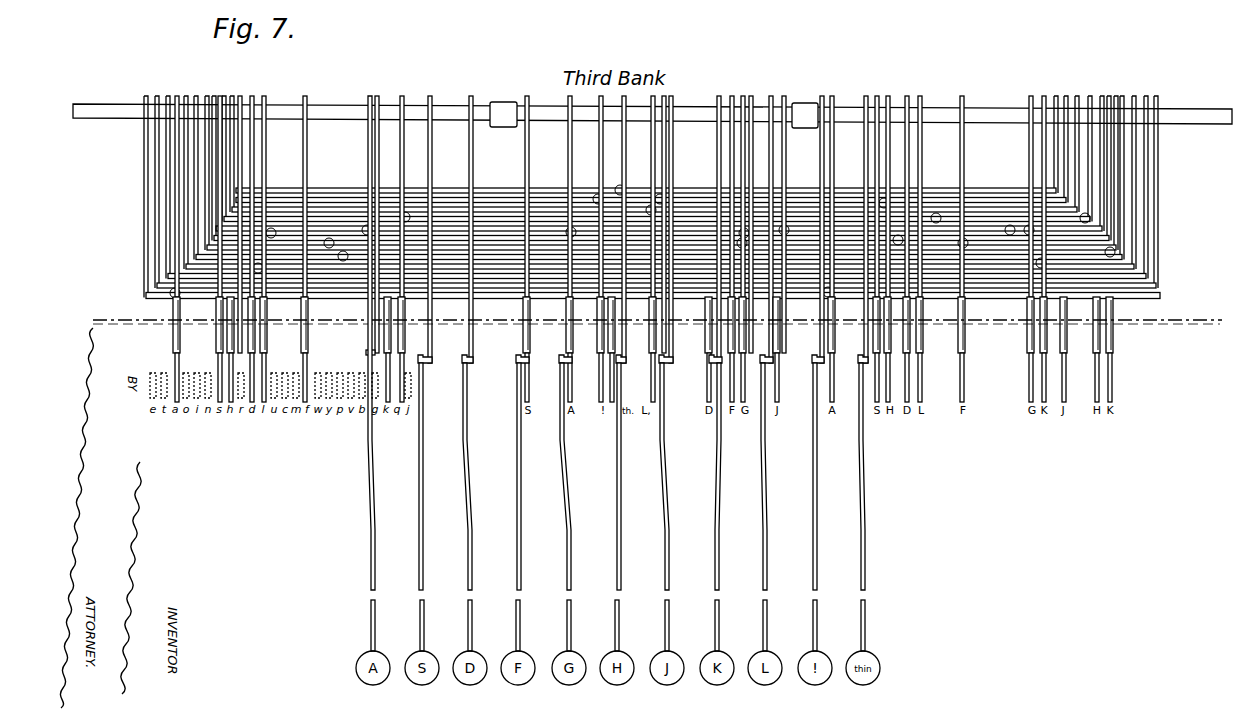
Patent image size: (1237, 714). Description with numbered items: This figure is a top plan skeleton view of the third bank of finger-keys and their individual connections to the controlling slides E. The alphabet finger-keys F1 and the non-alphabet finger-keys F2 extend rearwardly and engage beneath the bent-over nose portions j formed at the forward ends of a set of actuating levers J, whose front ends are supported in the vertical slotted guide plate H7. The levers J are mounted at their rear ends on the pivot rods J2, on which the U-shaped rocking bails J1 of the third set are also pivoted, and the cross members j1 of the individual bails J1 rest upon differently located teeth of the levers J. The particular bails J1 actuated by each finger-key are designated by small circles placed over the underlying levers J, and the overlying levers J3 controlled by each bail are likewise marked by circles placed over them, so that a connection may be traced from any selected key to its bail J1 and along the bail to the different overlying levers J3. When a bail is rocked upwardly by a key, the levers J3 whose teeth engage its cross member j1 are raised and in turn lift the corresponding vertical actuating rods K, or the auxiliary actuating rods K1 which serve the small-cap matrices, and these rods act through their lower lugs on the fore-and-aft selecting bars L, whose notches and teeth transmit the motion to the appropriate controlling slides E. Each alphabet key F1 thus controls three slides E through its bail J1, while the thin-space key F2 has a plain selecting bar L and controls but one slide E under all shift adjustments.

The pivot rods J2 is at (333, 108).
The U-shaped rocking bails J1 is at (243, 167).
The overlying levers J3 is at (307, 176).
The actuating levers J is at (567, 142).
The cross members j1 is at (488, 189).
The vertical actuating rods K is at (263, 345).
The auxiliary actuating rod K1 is at (783, 340).
The selecting bars L is at (323, 335).
The controlling slides E is at (317, 368).
The vertical slotted guide plate H7 is at (145, 322).
The bent-over nose portions j is at (432, 365).
The alphabet finger-keys F1 is at (515, 498).
The non-alphabet finger-keys F2 is at (860, 508).